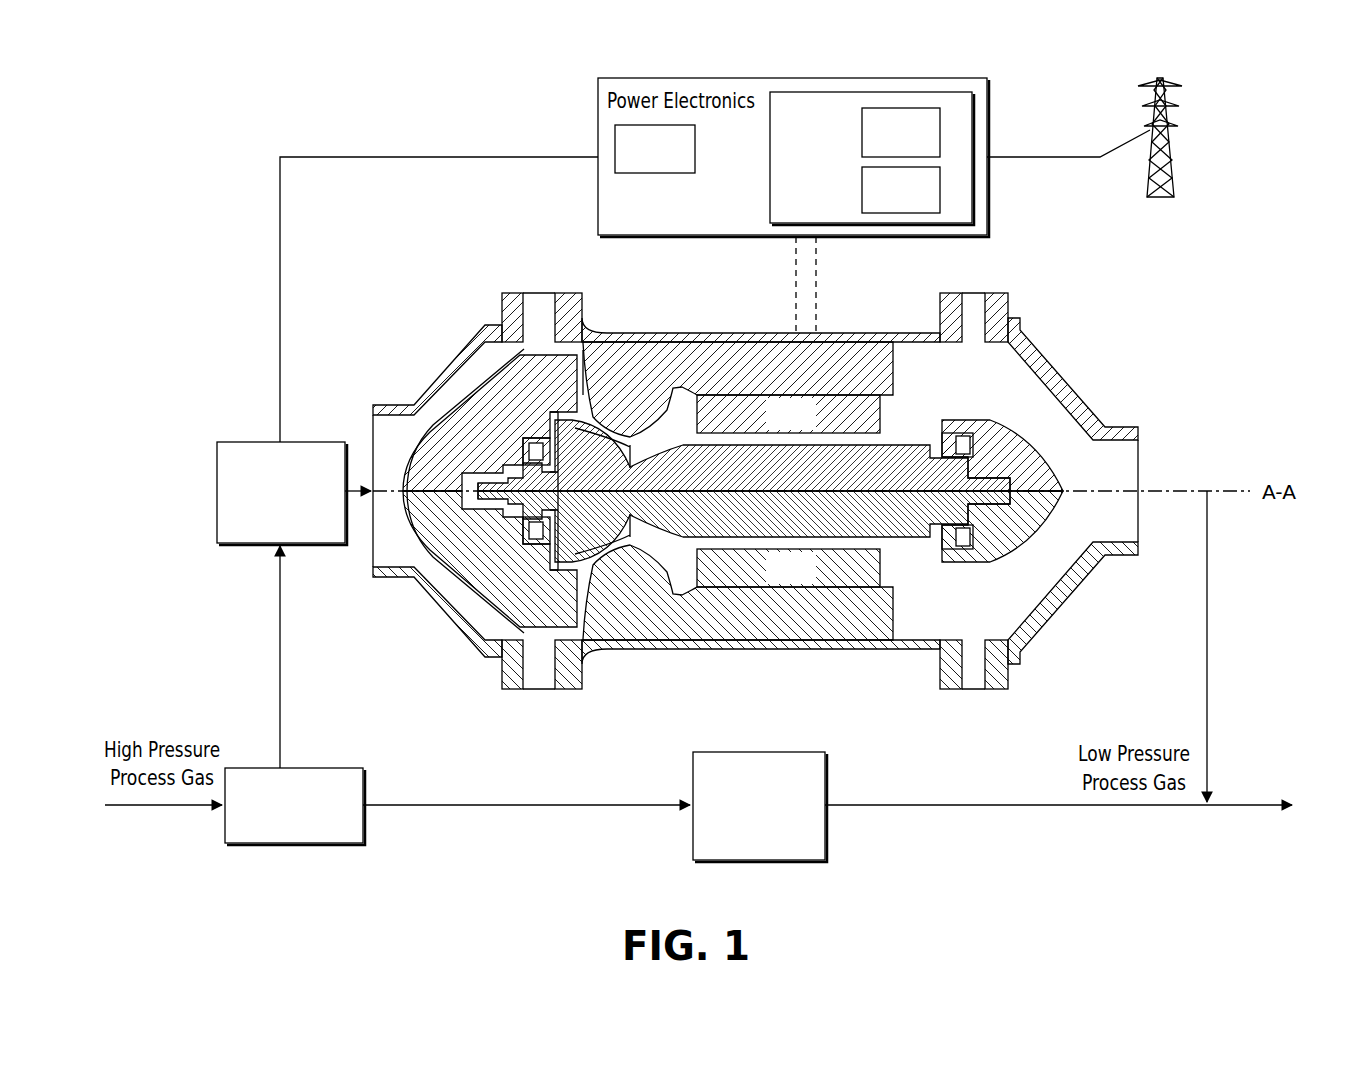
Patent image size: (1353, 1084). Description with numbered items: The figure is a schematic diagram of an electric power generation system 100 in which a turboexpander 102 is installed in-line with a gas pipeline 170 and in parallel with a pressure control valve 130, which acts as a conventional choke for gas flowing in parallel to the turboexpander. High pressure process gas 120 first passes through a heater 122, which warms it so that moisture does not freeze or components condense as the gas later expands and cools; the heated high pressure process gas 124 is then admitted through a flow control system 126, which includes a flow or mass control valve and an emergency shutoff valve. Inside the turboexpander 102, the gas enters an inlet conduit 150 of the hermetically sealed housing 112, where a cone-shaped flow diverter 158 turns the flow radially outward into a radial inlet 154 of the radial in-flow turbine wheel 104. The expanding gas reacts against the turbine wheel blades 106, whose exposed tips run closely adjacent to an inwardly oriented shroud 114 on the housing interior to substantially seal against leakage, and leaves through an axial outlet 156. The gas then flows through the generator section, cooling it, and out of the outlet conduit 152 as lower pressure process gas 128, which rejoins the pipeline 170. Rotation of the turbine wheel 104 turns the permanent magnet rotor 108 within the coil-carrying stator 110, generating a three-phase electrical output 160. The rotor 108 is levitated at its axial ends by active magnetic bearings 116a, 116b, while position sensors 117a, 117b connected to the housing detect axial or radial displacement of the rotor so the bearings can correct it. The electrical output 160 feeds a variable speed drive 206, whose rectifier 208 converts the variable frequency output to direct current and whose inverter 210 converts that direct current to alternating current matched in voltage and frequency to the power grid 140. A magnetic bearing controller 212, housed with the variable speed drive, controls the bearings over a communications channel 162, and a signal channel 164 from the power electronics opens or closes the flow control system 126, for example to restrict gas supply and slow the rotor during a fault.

The electric power generation system 100 is at (170, 135).
The turboexpander 102 is at (420, 333).
The turbine wheel 104 is at (565, 555).
The turbine wheel blades 106 is at (618, 553).
The rotor 108 is at (895, 537).
The stator 110 is at (814, 430).
The housing 112 is at (846, 653).
The shroud 114 is at (612, 543).
The bearing 116a is at (533, 458).
The bearing 116b is at (958, 427).
The position sensor 117a is at (558, 470).
The position sensor 117b is at (972, 440).
The high pressure process gas 120 is at (183, 807).
The heater 122 is at (314, 836).
The heated high pressure process gas 124 is at (279, 643).
The flow control system 126 is at (304, 536).
The lower pressure process gas 128 is at (1207, 643).
The pressure control valve 130 is at (782, 851).
The power grid 140 is at (1148, 186).
The inlet conduit 150 is at (373, 428).
The outlet conduit 152 is at (1140, 462).
The radial inlet 154 is at (597, 385).
The axial outlet 156 is at (640, 452).
The flow diverter 158 is at (490, 382).
The electrical output 160 is at (822, 283).
The communications channel 162 is at (790, 283).
The signal channel 164 is at (419, 157).
The gas pipeline 170 is at (1036, 807).
The variable speed drive 206 is at (827, 139).
The rectifier 208 is at (923, 149).
The inverter 210 is at (923, 208).
The magnetic bearing controller 212 is at (676, 167).